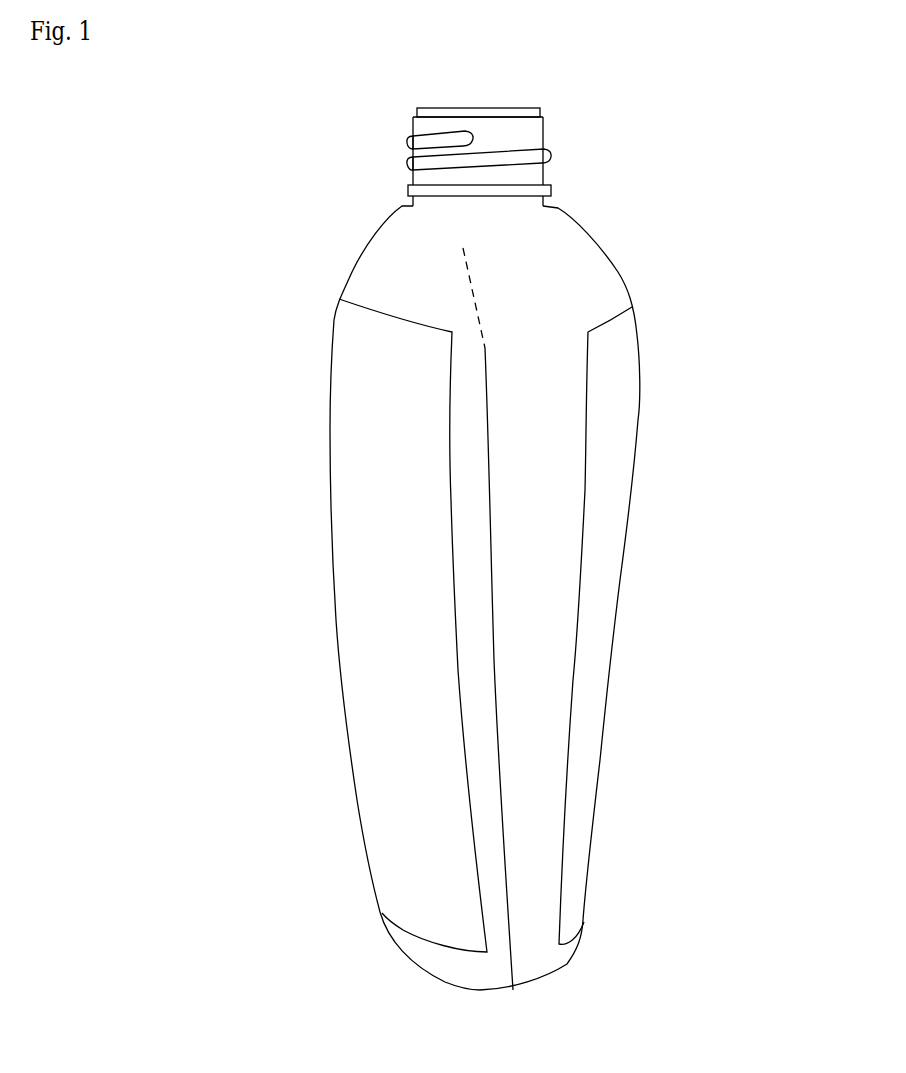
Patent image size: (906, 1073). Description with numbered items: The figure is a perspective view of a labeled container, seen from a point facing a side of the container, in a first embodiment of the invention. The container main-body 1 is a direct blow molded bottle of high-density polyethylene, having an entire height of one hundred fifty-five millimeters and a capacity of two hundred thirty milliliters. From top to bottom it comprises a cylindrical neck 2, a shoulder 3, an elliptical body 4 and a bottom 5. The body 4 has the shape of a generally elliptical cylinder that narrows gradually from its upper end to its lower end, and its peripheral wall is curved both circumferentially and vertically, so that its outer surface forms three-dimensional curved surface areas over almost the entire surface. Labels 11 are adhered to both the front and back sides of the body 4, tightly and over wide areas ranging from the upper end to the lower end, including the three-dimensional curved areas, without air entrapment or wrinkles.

The container main-body 1 is at (630, 232).
The cylindrical neck 2 is at (523, 138).
The shoulder 3 is at (376, 253).
The elliptical body 4 is at (548, 600).
The bottom 5 is at (543, 968).
The label 11 is at (385, 672).